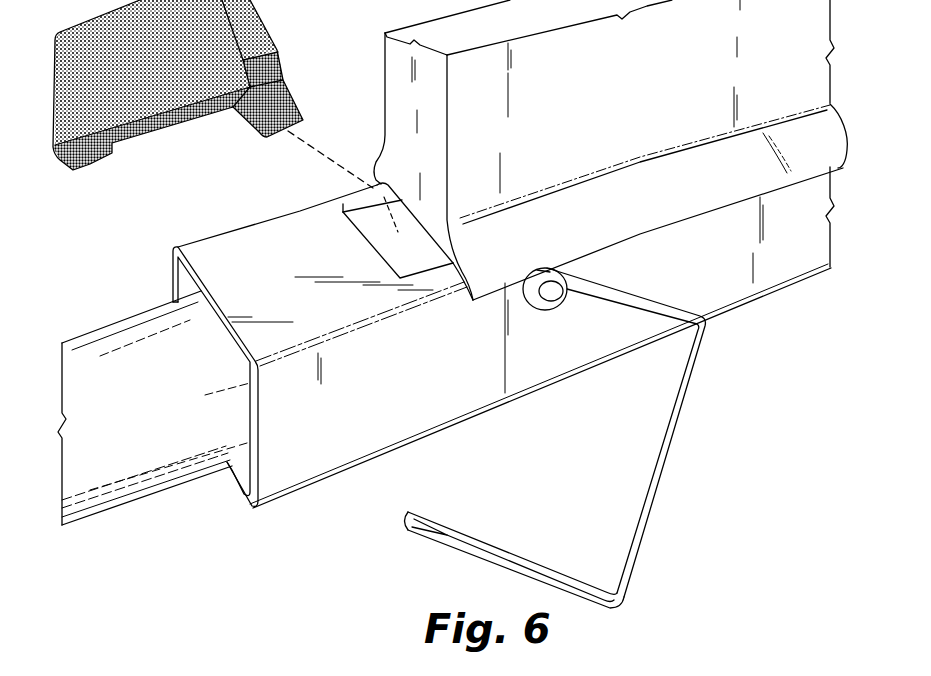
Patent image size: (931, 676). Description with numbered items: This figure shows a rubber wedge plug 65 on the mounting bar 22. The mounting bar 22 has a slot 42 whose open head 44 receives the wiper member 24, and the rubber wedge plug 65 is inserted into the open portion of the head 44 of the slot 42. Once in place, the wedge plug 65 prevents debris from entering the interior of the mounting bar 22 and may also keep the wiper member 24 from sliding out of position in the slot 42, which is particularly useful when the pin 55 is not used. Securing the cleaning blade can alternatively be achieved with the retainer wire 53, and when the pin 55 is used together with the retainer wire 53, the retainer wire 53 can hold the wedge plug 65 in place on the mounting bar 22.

The mounting bar 22 is at (429, 382).
The wiper member 24 is at (652, 136).
The slot 42 is at (427, 258).
The head of slot 44 is at (365, 238).
The retainer wire 53 is at (497, 547).
The pin 55 is at (531, 301).
The wedge plug 65 is at (168, 70).